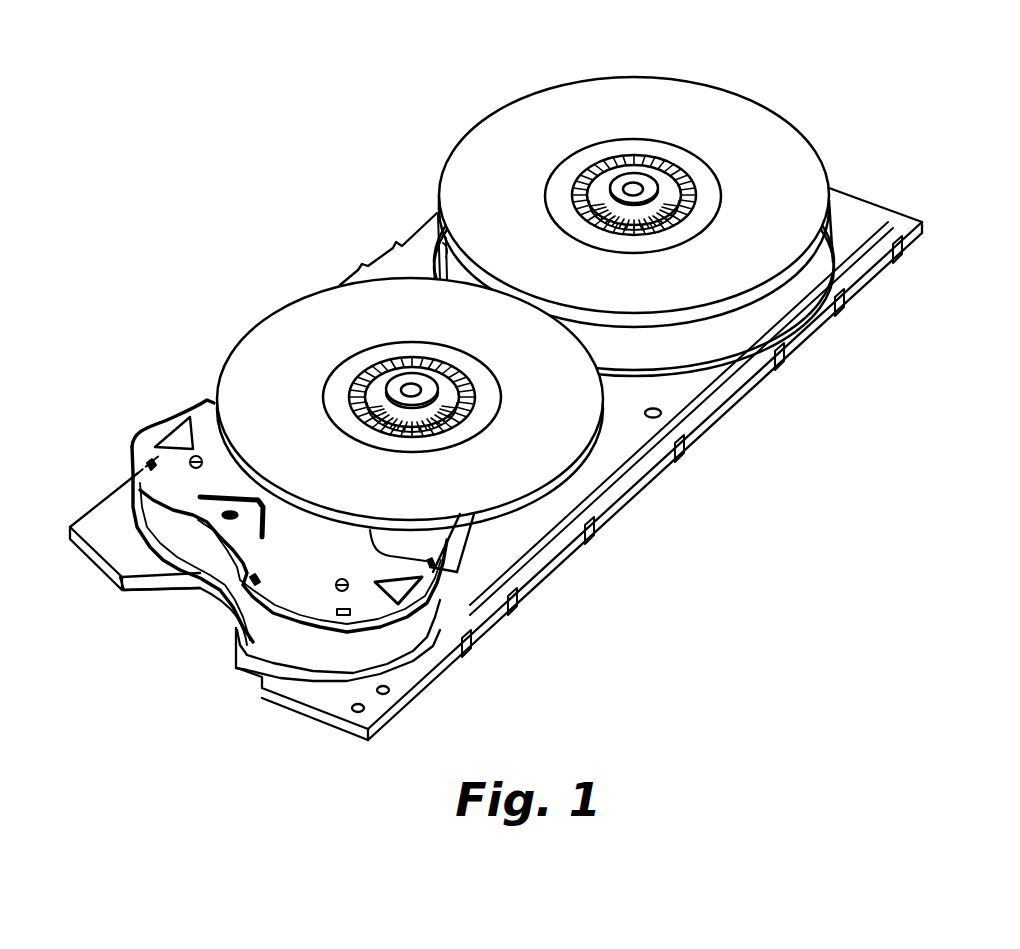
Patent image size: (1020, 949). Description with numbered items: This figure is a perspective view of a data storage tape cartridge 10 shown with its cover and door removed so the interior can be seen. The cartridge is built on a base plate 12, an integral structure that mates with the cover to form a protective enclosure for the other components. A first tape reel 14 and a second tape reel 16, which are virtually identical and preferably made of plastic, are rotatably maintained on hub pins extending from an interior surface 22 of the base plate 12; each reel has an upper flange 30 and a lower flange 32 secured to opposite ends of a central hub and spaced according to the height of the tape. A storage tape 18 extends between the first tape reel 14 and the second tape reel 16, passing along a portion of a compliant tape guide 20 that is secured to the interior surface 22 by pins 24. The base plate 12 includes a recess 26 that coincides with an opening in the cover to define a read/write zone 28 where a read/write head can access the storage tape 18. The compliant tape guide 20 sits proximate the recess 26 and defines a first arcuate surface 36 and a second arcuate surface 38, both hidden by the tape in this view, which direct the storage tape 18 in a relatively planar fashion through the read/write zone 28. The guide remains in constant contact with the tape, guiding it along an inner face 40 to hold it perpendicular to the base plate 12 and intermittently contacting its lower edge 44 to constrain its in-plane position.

The data storage tape cartridge 10 is at (422, 102).
The base plate 12 is at (890, 208).
The first tape reel 14 is at (737, 96).
The second tape reel 16 is at (278, 302).
The storage tape 18 is at (665, 340).
The compliant tape guide 20 is at (130, 430).
The interior surface 22 is at (617, 485).
The pins 24 is at (193, 455).
The recess 26 is at (148, 589).
The read/write zone 28 is at (203, 628).
The upper flange 30 is at (662, 86).
The lower flange 32 is at (444, 248).
The first arcuate surface 36 is at (153, 510).
The second arcuate surface 38 is at (392, 648).
The inner face 40 is at (772, 314).
The lower edge 44 is at (448, 600).